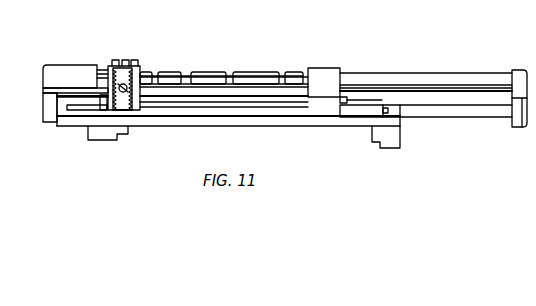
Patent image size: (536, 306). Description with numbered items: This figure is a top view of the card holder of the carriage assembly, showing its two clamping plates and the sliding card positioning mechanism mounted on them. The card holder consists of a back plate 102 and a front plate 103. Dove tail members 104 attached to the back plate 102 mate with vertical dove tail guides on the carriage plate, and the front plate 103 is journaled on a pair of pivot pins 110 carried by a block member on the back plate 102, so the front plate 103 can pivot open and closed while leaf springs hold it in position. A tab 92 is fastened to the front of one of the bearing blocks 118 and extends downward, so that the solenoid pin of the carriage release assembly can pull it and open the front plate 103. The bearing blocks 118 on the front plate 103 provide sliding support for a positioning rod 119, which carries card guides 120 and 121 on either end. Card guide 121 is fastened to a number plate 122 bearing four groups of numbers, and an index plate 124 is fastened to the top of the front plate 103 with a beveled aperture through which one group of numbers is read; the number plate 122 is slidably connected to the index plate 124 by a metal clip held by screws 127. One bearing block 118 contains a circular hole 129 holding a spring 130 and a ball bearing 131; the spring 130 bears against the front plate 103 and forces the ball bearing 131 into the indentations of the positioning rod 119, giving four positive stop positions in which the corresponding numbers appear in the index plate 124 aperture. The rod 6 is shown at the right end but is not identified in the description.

The rod 6 is at (446, 118).
The tab 92 is at (113, 62).
The back plate 102 is at (219, 128).
The front plate 103 is at (295, 110).
The dove tail members 104 is at (101, 141).
The pivot pins 110 is at (68, 122).
The bearing blocks 118 is at (101, 68).
The positioning rod 119 is at (408, 82).
The card guide 120 is at (517, 69).
The card guide 121 is at (59, 66).
The number plate 122 is at (46, 81).
The index plate 124 is at (190, 84).
The screws 127 is at (105, 105).
The circular hole 129 is at (134, 84).
The spring 130 is at (128, 112).
The ball bearing 131 is at (133, 72).